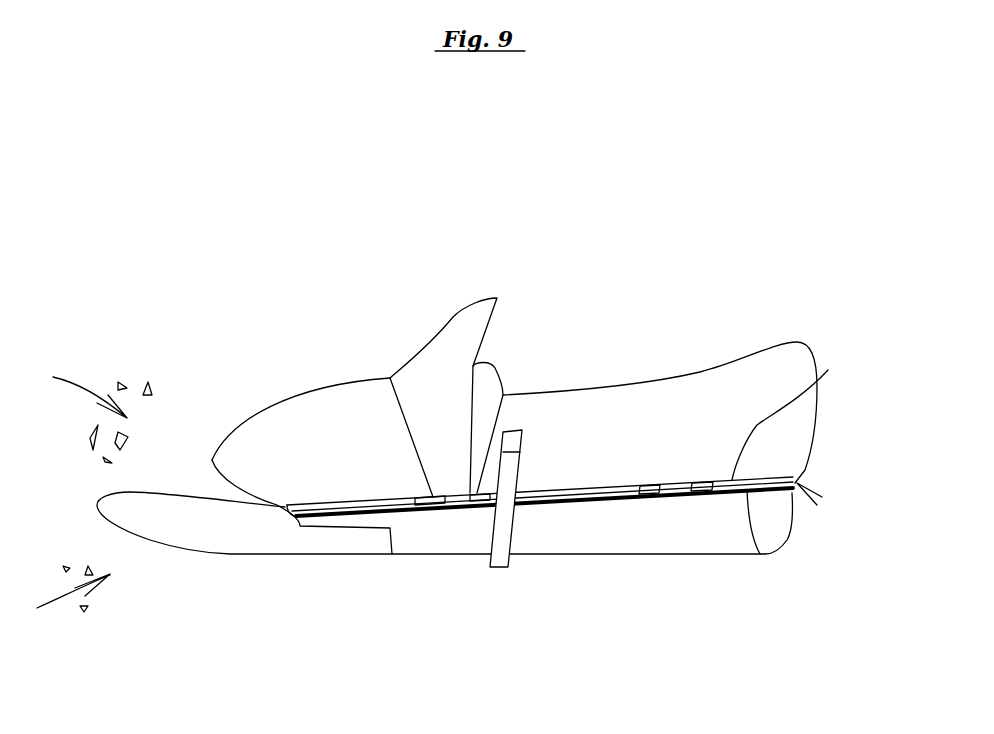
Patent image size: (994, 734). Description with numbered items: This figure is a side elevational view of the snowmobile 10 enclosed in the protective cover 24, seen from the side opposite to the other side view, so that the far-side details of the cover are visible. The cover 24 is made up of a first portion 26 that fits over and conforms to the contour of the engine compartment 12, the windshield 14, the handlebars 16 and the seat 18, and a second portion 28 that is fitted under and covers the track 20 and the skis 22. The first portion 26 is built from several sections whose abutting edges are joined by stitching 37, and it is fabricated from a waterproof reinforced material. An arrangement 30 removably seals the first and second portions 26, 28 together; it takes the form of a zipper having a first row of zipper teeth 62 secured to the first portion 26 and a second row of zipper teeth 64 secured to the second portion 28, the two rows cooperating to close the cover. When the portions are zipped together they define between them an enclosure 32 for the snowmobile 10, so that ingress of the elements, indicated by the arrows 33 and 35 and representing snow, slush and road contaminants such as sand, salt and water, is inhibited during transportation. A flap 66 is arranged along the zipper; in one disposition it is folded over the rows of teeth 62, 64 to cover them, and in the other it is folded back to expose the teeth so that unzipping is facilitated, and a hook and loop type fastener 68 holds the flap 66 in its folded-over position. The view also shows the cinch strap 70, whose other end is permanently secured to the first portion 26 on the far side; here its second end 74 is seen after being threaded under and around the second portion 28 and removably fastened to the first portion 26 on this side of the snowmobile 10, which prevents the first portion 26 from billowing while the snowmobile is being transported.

The snowmobile 10 is at (674, 219).
The engine compartment 12 is at (318, 451).
The windshield 14 is at (411, 378).
The handlebars 16 is at (526, 397).
The seat 18 is at (660, 421).
The track 20 is at (594, 573).
The skis 22 is at (431, 553).
The protective cover 24 is at (457, 222).
The first portion 26 is at (773, 323).
The second portion 28 is at (703, 578).
The arrangement for removably sealing 30 is at (837, 494).
The enclosure 32 is at (540, 484).
The arrows indicating ingress of the elements 33 is at (102, 375).
The arrows indicating ingress of the elements 35 is at (77, 632).
The stitching 37 is at (427, 561).
The first row of zipper teeth 62 is at (797, 424).
The second row of zipper teeth 64 is at (785, 565).
The flap 66 is at (540, 557).
The hook and loop type fastener 68 is at (648, 597).
The cinch strap 70 is at (495, 573).
The second end of the cinch strap 74 is at (559, 393).